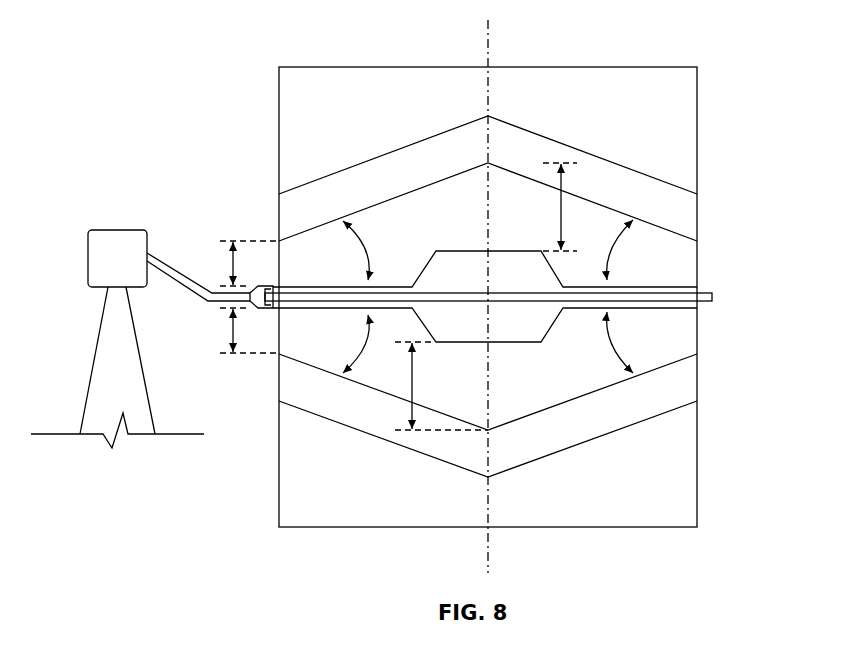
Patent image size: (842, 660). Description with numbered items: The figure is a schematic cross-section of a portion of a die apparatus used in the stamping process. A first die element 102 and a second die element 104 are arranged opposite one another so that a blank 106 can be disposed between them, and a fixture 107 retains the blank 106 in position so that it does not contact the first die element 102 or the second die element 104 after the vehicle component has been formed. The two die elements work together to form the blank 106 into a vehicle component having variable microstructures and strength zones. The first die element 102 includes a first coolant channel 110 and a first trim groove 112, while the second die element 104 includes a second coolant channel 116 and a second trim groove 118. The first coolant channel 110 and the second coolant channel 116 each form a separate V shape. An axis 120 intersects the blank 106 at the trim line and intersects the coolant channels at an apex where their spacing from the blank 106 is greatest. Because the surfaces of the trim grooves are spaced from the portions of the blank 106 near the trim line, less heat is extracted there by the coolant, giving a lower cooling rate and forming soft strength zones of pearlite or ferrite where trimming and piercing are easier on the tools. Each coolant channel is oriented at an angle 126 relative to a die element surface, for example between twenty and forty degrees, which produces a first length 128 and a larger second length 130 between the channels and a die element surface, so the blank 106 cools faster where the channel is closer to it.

The first die element 102 is at (686, 473).
The second die element 104 is at (685, 90).
The blank 106 is at (272, 310).
The fixture 107 is at (116, 230).
The first coolant channel 110 is at (672, 360).
The first trim groove 112 is at (552, 327).
The second coolant channel 116 is at (660, 195).
The second trim groove 118 is at (552, 270).
The axis 120 is at (489, 48).
The angle 126 is at (360, 250).
The first length 128 is at (233, 262).
The second length 130 is at (561, 203).